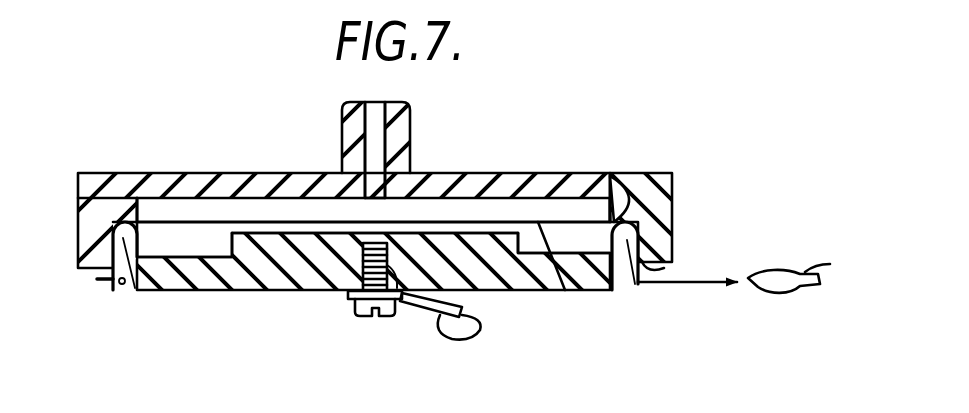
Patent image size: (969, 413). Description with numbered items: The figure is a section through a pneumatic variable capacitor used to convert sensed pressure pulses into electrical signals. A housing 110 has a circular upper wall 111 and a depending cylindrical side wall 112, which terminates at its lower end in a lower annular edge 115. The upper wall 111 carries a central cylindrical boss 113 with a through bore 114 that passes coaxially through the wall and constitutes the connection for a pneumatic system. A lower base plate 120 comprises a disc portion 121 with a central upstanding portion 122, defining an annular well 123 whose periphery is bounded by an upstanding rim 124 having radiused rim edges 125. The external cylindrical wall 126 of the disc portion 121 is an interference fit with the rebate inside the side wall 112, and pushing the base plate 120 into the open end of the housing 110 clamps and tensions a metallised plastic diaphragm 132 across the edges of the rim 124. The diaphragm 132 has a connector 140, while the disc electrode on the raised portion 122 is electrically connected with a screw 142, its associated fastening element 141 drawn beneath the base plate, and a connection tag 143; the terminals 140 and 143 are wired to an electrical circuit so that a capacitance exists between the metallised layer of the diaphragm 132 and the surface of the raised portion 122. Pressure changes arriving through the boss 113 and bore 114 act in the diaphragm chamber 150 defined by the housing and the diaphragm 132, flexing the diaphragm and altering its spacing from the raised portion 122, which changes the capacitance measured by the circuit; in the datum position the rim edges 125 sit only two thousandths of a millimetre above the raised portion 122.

The housing 110 is at (504, 188).
The circular upper wall 111 is at (197, 185).
The cylindrical side wall 112 is at (652, 205).
The central cylindrical boss 113 is at (410, 110).
The through bore 114 is at (372, 125).
The lower annular edge 115 is at (664, 268).
The lower base plate 120 is at (468, 264).
The disc portion 121 is at (263, 270).
The central upstanding portion 122 is at (303, 243).
The annular well 123 is at (572, 240).
The upstanding rim 124 is at (619, 240).
The rim edges 125 is at (137, 292).
The external cylindrical wall 126 is at (125, 292).
The metallised plastic diaphragm 132 is at (565, 290).
The connector 140 is at (776, 268).
The screw head / nut 141 is at (398, 320).
The screw 142 is at (357, 317).
The connection tag 143 is at (479, 334).
The diaphragm chamber 150 is at (288, 210).